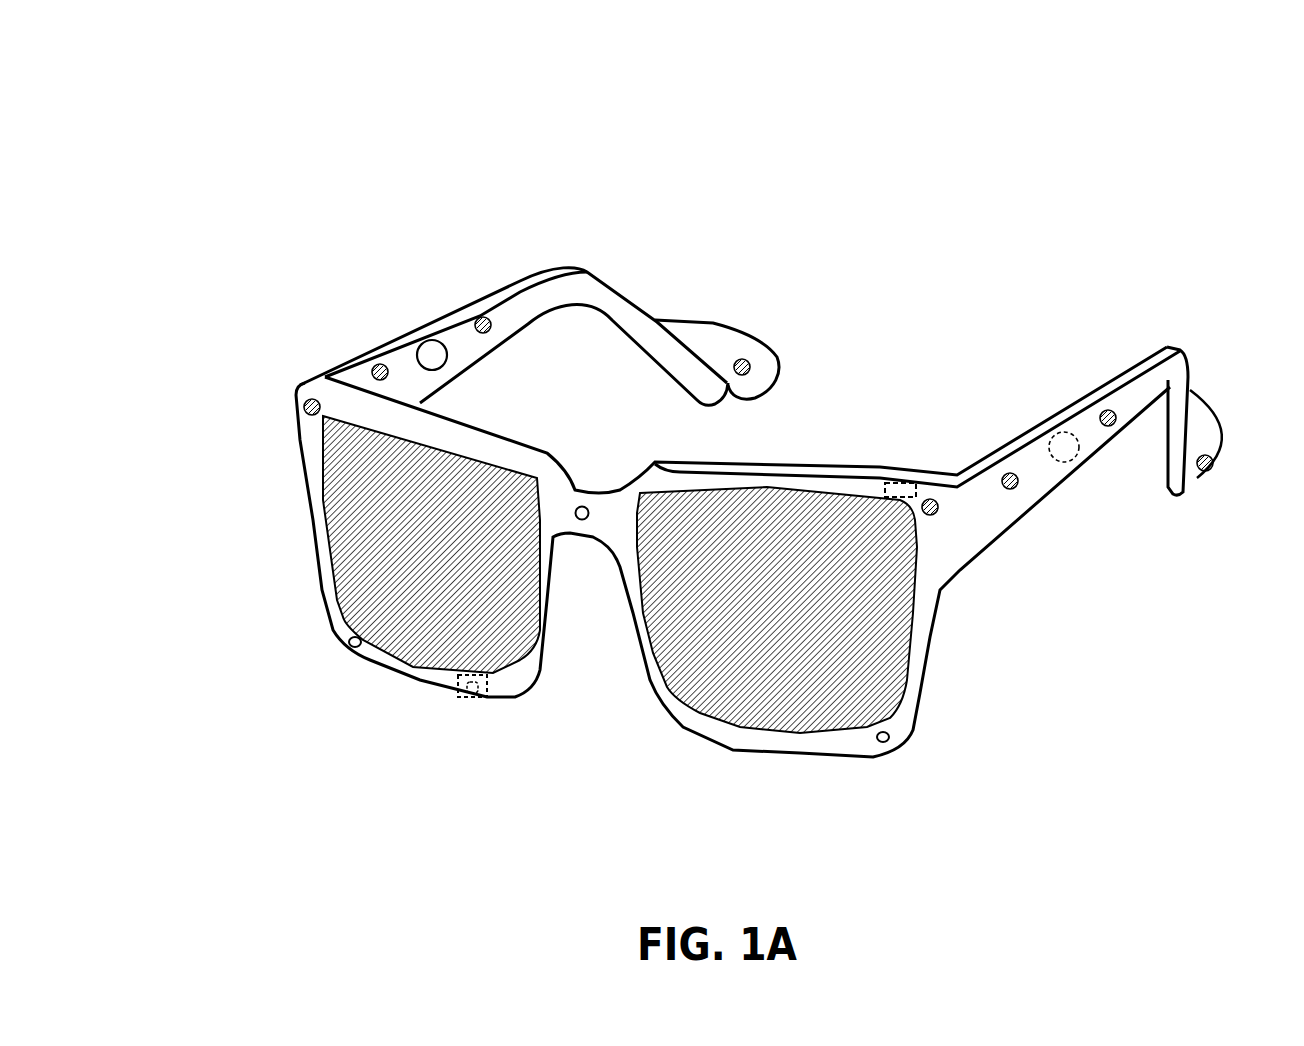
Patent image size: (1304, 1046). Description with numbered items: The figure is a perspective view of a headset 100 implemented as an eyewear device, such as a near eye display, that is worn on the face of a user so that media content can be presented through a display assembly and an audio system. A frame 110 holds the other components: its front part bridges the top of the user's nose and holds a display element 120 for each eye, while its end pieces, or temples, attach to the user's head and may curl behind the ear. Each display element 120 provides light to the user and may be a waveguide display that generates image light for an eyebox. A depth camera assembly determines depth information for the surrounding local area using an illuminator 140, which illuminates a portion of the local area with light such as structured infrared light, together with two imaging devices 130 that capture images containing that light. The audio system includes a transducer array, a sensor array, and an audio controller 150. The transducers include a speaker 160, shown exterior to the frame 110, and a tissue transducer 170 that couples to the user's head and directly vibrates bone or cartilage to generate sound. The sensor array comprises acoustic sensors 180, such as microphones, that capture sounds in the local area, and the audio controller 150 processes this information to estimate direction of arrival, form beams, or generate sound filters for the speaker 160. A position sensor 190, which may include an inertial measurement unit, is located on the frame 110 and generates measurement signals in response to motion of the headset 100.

The headset 100 is at (148, 91).
The frame 110 is at (1167, 347).
The display element 120 is at (373, 545).
The imaging device 130 is at (348, 650).
The illuminator 140 is at (581, 520).
The audio controller 150 is at (895, 483).
The speaker 160 is at (429, 340).
The tissue transducer 170 is at (703, 321).
The acoustic sensor 180 is at (311, 398).
The position sensor 190 is at (470, 695).